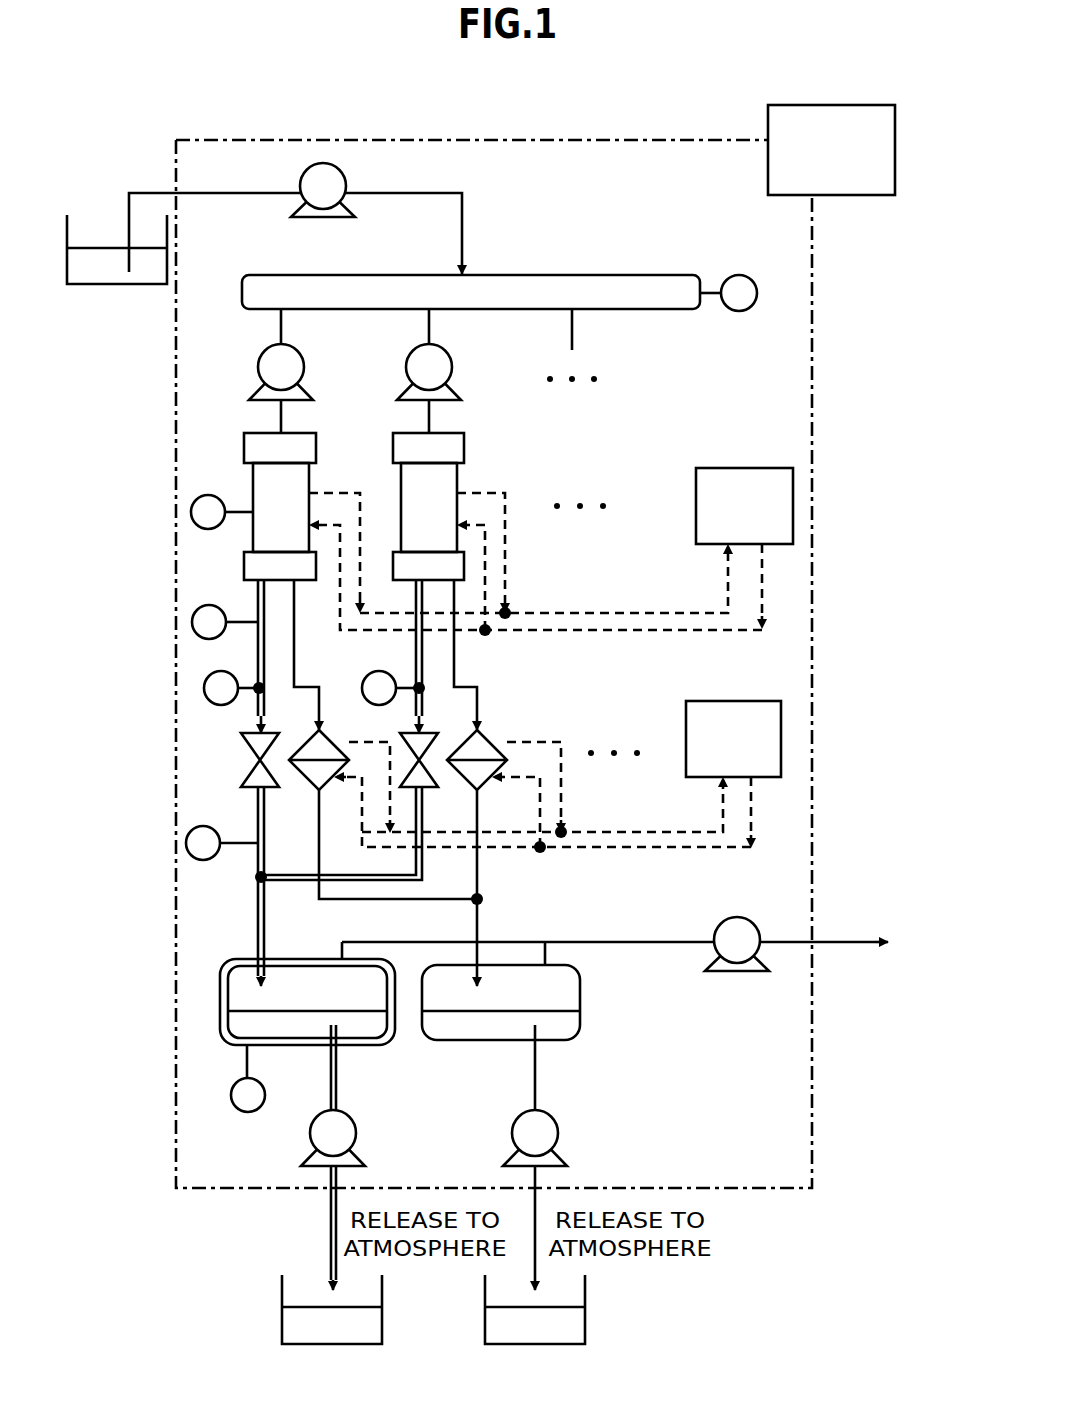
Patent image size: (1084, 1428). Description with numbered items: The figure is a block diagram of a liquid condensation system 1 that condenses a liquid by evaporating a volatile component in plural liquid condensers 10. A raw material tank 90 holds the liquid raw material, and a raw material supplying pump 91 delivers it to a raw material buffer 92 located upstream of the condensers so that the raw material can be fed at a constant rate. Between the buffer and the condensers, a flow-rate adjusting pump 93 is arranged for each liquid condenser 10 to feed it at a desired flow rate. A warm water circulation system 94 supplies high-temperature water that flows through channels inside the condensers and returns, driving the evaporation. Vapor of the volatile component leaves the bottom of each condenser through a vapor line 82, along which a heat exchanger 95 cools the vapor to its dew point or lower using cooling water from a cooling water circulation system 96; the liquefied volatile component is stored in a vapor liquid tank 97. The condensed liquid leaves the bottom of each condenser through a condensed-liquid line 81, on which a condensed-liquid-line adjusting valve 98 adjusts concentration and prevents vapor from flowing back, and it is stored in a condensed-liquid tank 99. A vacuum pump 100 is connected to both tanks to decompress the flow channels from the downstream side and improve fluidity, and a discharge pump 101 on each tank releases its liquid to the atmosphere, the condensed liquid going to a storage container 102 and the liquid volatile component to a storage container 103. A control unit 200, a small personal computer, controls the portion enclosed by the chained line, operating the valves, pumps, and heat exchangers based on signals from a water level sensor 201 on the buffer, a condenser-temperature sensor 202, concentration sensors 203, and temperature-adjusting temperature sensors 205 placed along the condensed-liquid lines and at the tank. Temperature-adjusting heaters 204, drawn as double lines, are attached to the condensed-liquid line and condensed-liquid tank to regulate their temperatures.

The liquid condensation system 1 is at (185, 103).
The liquid condenser 10 is at (466, 438).
The condensed-liquid line 81 is at (257, 597).
The vapor line 82 is at (296, 655).
The raw material tank 90 is at (93, 238).
The raw material supplying pump 91 is at (307, 165).
The raw material buffer 92 is at (565, 290).
The flow-rate adjusting pump 93 is at (258, 362).
The warm water circulation system 94 is at (762, 488).
The heat exchanger 95 is at (496, 742).
The cooling water circulation system 96 is at (768, 740).
The vapor liquid tank 97 is at (560, 994).
The condensed-liquid-line adjusting valve 98 is at (243, 776).
The condensed-liquid tank 99 is at (244, 1025).
The vacuum pump 100 is at (765, 972).
The discharge pump 101 is at (558, 1128).
The storage container 102 is at (295, 1312).
The storage container 103 is at (565, 1312).
The control unit 200 is at (876, 149).
The water level sensor 201 is at (758, 290).
The condenser-temperature sensor 202 is at (191, 513).
The concentration sensor 203 is at (362, 690).
The temperature-adjusting heater 204 is at (257, 914).
The temperature-adjusting temperature sensor 205 is at (192, 622).